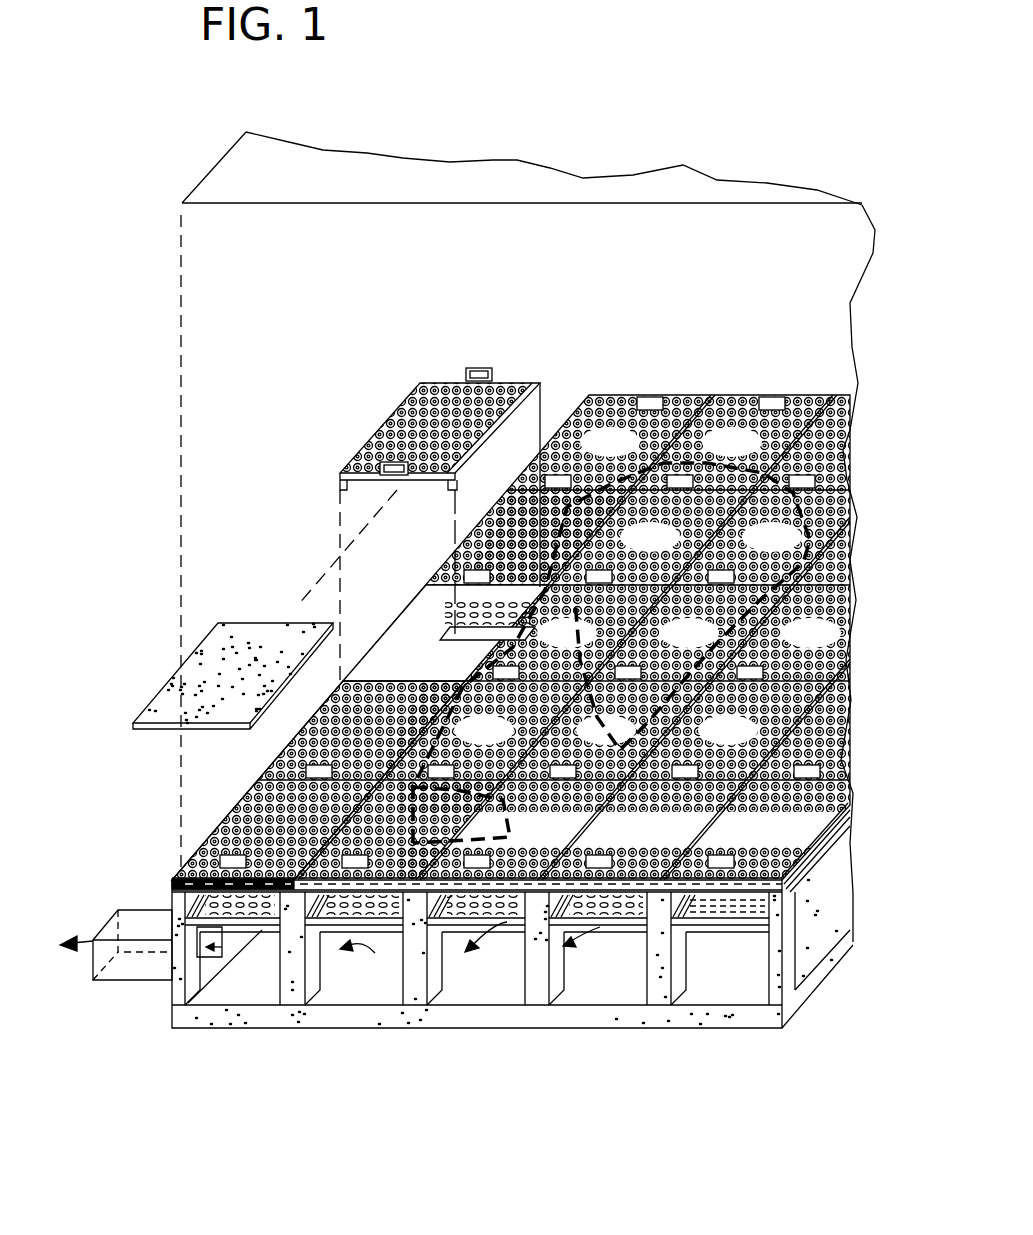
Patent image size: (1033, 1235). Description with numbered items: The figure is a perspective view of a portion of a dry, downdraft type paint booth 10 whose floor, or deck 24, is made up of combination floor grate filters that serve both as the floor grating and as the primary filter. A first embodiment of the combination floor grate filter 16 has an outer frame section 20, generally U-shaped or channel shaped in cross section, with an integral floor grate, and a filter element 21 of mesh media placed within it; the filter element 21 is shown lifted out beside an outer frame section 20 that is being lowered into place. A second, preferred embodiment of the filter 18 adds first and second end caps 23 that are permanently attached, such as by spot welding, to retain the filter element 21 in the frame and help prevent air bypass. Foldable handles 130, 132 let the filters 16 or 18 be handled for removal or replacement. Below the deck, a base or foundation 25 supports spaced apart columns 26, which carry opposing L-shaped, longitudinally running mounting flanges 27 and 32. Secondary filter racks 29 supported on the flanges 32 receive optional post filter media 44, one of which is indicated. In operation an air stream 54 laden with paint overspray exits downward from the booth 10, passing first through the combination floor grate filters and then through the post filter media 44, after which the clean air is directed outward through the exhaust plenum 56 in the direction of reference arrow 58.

The downdraft type paint booth 10 is at (211, 167).
The combination floor grate filter (first embodiment) 16 is at (241, 795).
The combination floor grate filter (second embodiment) 18 is at (818, 803).
The outer frame section 20 is at (382, 427).
The filter element 21 is at (247, 622).
The end caps 23 is at (796, 888).
The deck 24 is at (852, 451).
The base or foundation 25 is at (806, 990).
The columns 26 is at (767, 967).
The mounting flange 27 is at (821, 847).
The secondary filter rack 29 is at (506, 926).
The support flange 32 is at (560, 938).
The post filter media 44 is at (742, 910).
The air stream 54 is at (375, 953).
The exhaust plenum 56 is at (147, 980).
The reference arrow 58 is at (85, 948).
The foldable handle 130 is at (368, 478).
The foldable handle 132 is at (478, 368).